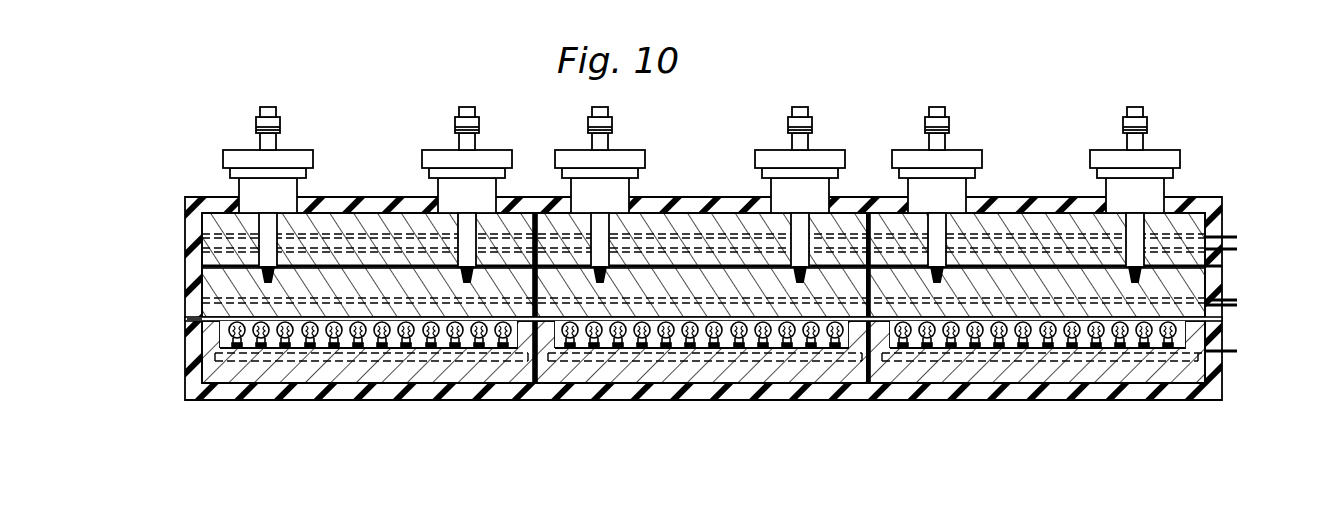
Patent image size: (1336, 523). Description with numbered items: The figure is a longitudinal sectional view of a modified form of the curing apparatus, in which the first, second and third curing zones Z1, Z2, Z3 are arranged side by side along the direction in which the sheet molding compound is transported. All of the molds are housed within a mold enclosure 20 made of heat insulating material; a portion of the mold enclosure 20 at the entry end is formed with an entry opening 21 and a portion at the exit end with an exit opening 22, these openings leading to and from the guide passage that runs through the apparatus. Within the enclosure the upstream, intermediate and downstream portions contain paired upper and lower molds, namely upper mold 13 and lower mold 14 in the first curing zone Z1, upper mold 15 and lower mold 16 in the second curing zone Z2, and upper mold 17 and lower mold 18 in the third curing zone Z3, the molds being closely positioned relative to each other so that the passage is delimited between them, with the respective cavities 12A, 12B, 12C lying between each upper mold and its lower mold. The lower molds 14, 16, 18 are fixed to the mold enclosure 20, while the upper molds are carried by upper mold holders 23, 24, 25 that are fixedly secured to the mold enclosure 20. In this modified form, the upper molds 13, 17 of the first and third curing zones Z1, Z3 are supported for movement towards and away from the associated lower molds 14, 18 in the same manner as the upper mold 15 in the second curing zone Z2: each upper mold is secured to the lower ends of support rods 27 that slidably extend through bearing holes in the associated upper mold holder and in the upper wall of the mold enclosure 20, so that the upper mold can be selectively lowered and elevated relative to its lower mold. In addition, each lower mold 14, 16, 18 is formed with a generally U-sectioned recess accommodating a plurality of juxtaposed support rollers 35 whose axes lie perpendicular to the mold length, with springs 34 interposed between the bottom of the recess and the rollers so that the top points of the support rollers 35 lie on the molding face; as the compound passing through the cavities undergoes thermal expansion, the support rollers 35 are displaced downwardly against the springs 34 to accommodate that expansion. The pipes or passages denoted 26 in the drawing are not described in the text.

The cavity 12A is at (366, 350).
The cavity 12B is at (797, 322).
The cavity 12C is at (1110, 358).
The upper mold 13 is at (343, 273).
The lower mold 14 is at (322, 383).
The upper mold 15 is at (688, 272).
The lower mold 16 is at (626, 375).
The upper mold 17 is at (1020, 275).
The lower mold 18 is at (988, 372).
The mold enclosure 20 is at (222, 398).
The entry opening 21 is at (186, 320).
The exit opening 22 is at (1222, 319).
The upper mold holder 23 is at (205, 197).
The upper mold holder 24 is at (852, 222).
The upper mold holder 25 is at (1068, 222).
The coolant pipes 26 is at (1190, 222).
The support rod 27 is at (272, 222).
The spring 34 is at (463, 350).
The support roller 35 is at (445, 346).
The first curing zone Z1 is at (386, 100).
The second curing zone Z2 is at (721, 101).
The third curing zone Z3 is at (1043, 96).